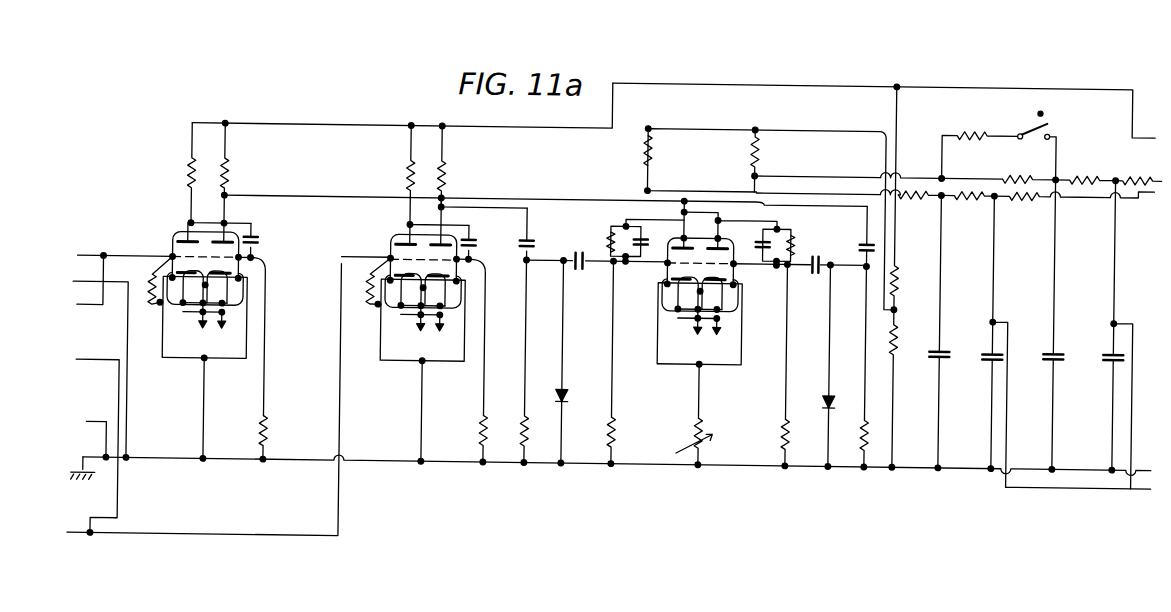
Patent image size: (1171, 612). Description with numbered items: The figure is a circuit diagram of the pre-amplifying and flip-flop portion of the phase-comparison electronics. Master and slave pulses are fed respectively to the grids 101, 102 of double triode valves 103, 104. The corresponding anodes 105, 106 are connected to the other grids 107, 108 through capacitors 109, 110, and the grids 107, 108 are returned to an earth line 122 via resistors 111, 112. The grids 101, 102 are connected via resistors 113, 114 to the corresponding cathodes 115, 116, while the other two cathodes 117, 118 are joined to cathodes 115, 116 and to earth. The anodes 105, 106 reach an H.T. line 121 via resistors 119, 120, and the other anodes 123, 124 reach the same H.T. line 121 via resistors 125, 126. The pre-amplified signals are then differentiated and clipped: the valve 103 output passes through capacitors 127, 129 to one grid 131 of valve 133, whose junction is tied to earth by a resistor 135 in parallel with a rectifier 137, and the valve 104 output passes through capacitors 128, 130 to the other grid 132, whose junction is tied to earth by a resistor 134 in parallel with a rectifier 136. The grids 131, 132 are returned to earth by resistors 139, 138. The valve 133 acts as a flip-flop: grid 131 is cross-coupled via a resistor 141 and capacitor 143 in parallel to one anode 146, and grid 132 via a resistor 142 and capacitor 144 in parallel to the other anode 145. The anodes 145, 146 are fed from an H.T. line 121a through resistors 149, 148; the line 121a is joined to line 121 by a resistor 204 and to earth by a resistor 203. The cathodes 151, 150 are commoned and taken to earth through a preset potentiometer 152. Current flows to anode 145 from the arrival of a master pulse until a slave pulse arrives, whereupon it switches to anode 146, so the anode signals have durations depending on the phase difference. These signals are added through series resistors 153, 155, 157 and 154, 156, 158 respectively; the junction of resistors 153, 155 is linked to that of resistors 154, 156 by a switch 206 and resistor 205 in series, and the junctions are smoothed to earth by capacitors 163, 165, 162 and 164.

The grid 101 is at (172, 262).
The grid 102 is at (389, 260).
The double triode valve 103 is at (161, 248).
The double triode valve 104 is at (380, 246).
The anode 105 is at (187, 237).
The anode 106 is at (404, 239).
The grid 107 is at (252, 264).
The grid 108 is at (470, 264).
The capacitor 109 is at (252, 249).
The capacitor 110 is at (473, 245).
The resistor 111 is at (265, 417).
The resistor 112 is at (482, 433).
The resistor 113 is at (152, 306).
The resistor 114 is at (369, 306).
The cathode 115 is at (172, 292).
The cathode 116 is at (388, 292).
The cathode 117 is at (240, 300).
The cathode 118 is at (453, 288).
The resistor 119 is at (186, 178).
The resistor 120 is at (405, 178).
The H.T. line 121 is at (300, 128).
The H.T. line 121a is at (822, 128).
The earth line 122 is at (289, 455).
The anode 123 is at (226, 242).
The anode 124 is at (445, 240).
The resistor 125 is at (227, 178).
The resistor 126 is at (443, 178).
The capacitor 127 is at (870, 241).
The capacitor 128 is at (533, 246).
The capacitor 129 is at (816, 275).
The capacitor 130 is at (582, 270).
The grid 131 is at (733, 268).
The grid 132 is at (667, 283).
The valve 133 is at (777, 228).
The resistor 134 is at (524, 426).
The resistor 135 is at (868, 436).
The rectifier 136 is at (565, 392).
The rectifier 137 is at (833, 395).
The resistor 138 is at (614, 437).
The resistor 139 is at (789, 437).
The resistor 141 is at (792, 244).
The resistor 142 is at (608, 234).
The capacitor 143 is at (762, 262).
The capacitor 144 is at (648, 232).
The anode 145 is at (722, 241).
The anode 146 is at (646, 240).
The resistor 148 is at (650, 148).
The resistor 149 is at (757, 148).
The cathode 150 is at (672, 292).
The cathode 151 is at (738, 292).
The preset potentiometer 152 is at (705, 443).
The resistor 153 is at (1020, 175).
The resistor 154 is at (897, 188).
The resistor 155 is at (1085, 174).
The resistor 156 is at (966, 190).
The resistor 157 is at (1135, 174).
The resistor 158 is at (1026, 195).
The capacitor 162 is at (930, 356).
The capacitor 163 is at (1046, 357).
The capacitor 164 is at (984, 357).
The capacitor 165 is at (1106, 357).
The resistor 203 is at (897, 346).
The resistor 204 is at (910, 200).
The resistor 205 is at (970, 130).
The switch 206 is at (1018, 128).